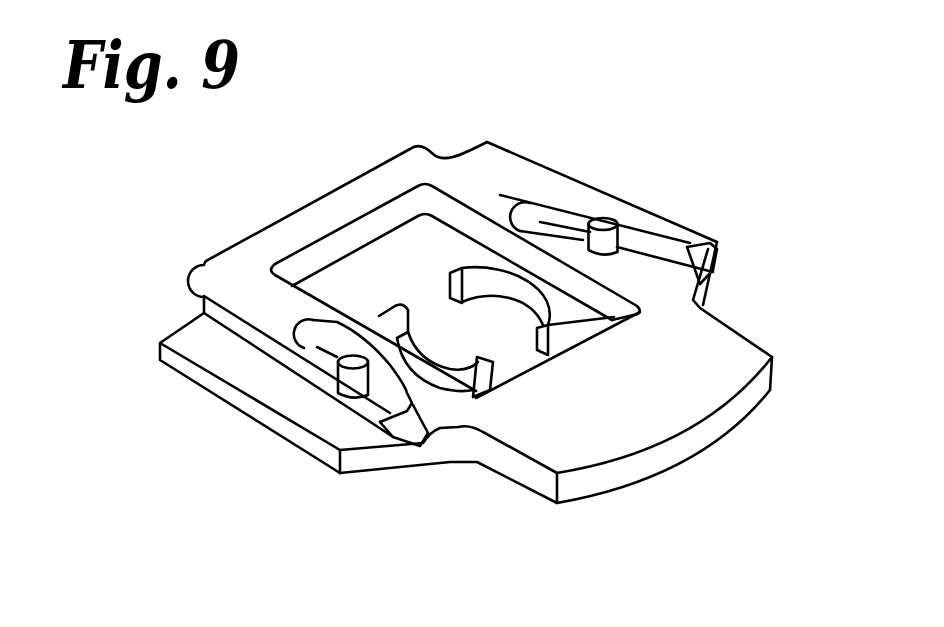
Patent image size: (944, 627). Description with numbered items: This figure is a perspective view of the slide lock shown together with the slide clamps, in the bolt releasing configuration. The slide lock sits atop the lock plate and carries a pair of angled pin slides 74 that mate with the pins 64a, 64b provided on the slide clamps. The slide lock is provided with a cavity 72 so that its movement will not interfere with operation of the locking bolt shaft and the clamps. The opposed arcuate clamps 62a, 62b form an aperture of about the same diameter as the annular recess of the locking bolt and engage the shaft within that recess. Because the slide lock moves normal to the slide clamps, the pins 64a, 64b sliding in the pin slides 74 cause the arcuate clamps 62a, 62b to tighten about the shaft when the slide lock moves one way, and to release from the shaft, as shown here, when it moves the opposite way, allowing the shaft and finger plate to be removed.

The arcuate clamp 62a is at (470, 270).
The arcuate clamp 62b is at (378, 316).
The pin 64a is at (616, 226).
The pin 64b is at (338, 380).
The cavity 72 is at (618, 311).
The pin slide 74 is at (663, 250).